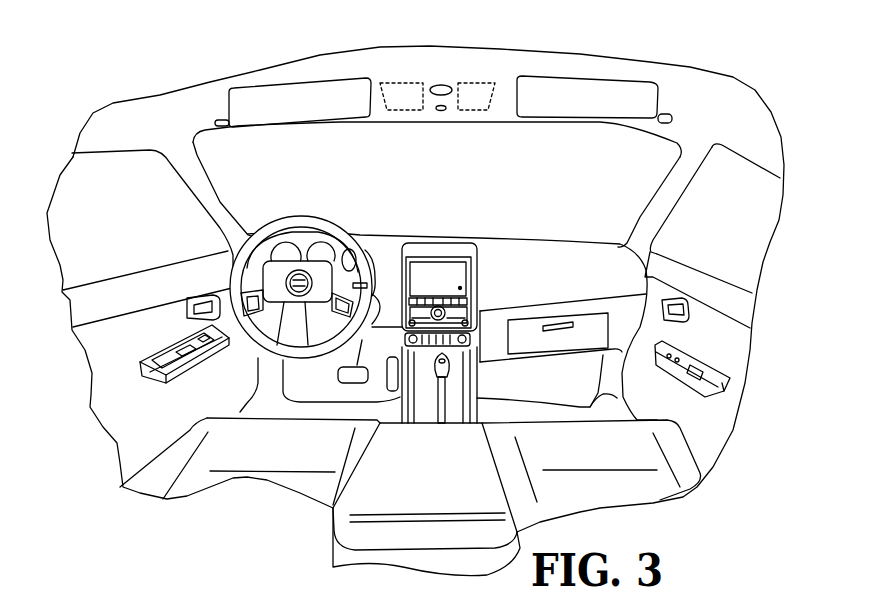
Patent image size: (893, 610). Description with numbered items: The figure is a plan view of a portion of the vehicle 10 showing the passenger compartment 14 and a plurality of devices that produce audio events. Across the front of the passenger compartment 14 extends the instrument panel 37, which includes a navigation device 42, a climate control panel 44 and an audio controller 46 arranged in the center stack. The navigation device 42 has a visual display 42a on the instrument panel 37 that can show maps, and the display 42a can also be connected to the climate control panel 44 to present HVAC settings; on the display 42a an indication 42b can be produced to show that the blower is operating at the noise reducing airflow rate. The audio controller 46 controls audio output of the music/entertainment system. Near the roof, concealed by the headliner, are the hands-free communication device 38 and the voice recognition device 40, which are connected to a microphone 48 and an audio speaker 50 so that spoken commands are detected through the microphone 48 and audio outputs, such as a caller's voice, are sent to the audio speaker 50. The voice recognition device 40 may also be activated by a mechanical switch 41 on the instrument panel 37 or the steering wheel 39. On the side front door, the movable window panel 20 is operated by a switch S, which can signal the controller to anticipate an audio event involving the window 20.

The vehicle 10 is at (205, 77).
The passenger compartment 14 is at (753, 140).
The movable window panel 20 is at (112, 187).
The instrument panel 37 is at (463, 225).
The hands-free communication device 38 is at (473, 98).
The steering wheel 39 is at (290, 218).
The voice recognition device 40 is at (405, 100).
The mechanical switch 41 is at (368, 286).
The navigation device 42 is at (440, 312).
The visual display 42a is at (427, 280).
The indication 42b is at (461, 288).
The climate control panel 44 is at (468, 321).
The audio controller 46 is at (465, 344).
The microphone 48 is at (445, 112).
The audio speaker 50 is at (447, 84).
The switch S is at (205, 337).